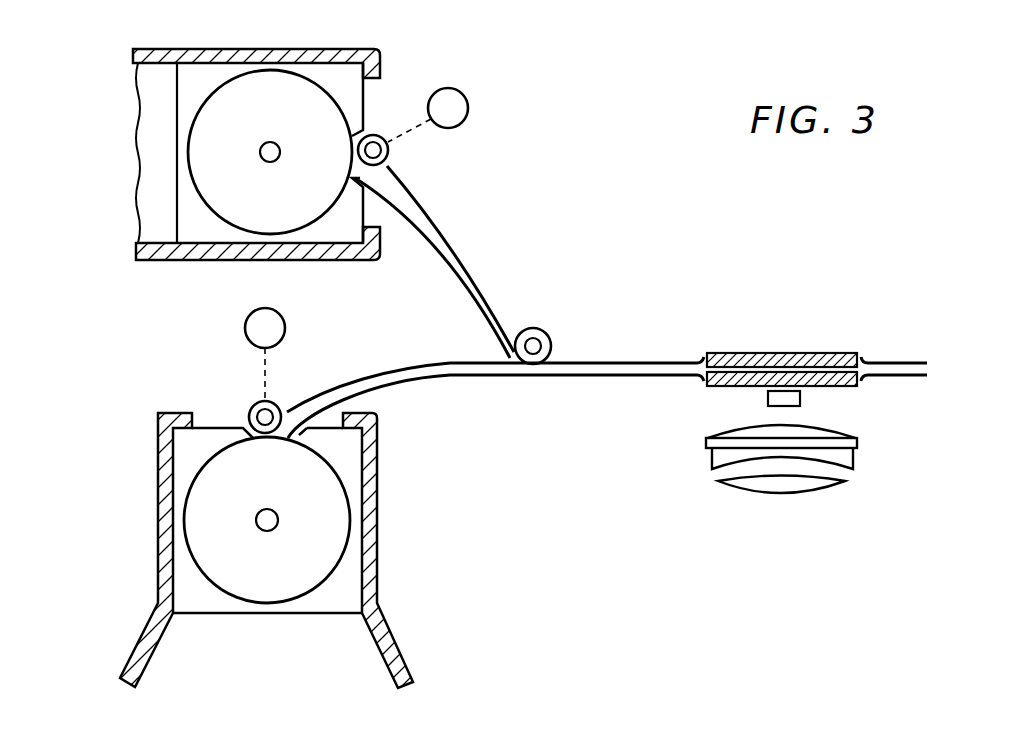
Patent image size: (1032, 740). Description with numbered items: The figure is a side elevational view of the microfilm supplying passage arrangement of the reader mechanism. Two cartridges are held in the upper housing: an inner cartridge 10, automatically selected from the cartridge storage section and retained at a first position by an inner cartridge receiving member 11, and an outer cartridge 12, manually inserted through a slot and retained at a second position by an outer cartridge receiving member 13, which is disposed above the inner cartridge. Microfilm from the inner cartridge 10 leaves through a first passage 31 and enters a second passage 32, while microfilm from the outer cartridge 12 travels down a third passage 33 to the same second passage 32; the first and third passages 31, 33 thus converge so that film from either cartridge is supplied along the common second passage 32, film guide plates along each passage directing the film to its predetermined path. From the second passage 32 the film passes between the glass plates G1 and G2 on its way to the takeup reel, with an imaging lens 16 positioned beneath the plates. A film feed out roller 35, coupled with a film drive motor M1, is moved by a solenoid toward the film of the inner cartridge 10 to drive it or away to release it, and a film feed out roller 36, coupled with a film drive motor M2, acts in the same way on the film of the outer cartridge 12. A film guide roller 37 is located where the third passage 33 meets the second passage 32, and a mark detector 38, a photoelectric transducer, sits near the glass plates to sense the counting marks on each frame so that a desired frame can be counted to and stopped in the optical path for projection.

The inner cartridge 10 is at (345, 472).
The inner cartridge receiving member 11 is at (370, 427).
The outer cartridge 12 is at (353, 105).
The outer cartridge receiving member 13 is at (347, 52).
The imaging lens 16 is at (847, 463).
The first passage 31 is at (390, 372).
The second passage 32 is at (623, 370).
The third passage 33 is at (450, 260).
The film feed out roller 35 is at (273, 402).
The film feed out roller 36 is at (389, 152).
The film guide roller 37 is at (548, 330).
The mark detector 38 is at (777, 397).
The glass plate G1 is at (842, 383).
The glass plate G2 is at (833, 353).
The film drive motor M1 is at (265, 354).
The film drive motor M2 is at (428, 115).